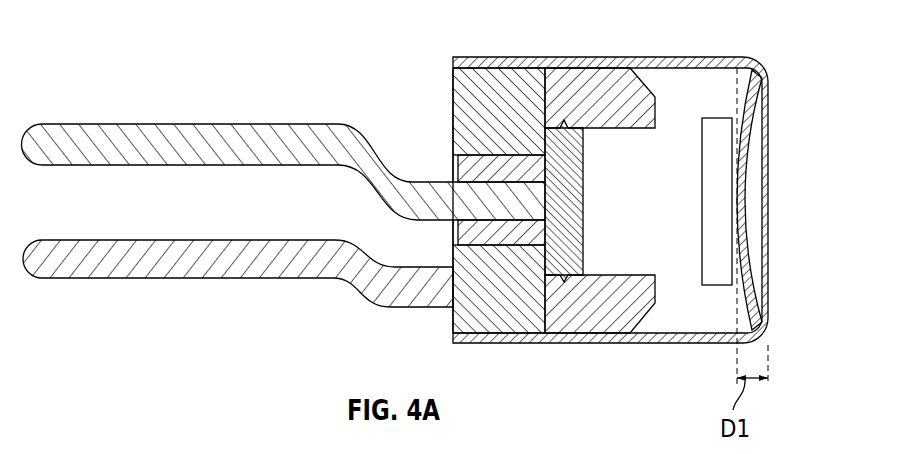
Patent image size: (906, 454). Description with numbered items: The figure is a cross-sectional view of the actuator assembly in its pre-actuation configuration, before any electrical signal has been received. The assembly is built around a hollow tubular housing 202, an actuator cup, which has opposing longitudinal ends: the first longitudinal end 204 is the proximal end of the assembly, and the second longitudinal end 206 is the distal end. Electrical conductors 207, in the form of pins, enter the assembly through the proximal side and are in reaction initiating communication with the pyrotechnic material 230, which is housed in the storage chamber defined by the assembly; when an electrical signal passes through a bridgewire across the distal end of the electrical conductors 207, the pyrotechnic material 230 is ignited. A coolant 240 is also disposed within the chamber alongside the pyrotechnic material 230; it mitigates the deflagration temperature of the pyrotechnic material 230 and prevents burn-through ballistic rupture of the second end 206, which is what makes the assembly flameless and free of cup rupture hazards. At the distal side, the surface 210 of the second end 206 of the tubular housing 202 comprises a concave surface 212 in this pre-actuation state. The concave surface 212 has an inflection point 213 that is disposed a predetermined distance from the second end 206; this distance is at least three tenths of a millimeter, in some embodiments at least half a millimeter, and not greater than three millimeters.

The tubular housing 202 is at (640, 343).
The first longitudinal end 204 is at (448, 52).
The second longitudinal end 206 is at (645, 211).
The electrical conductors 207 is at (120, 128).
The surface 210 is at (654, 211).
The concave surface 212 is at (791, 200).
The inflection point 213 is at (748, 208).
The pyrotechnic material 230 is at (560, 162).
The coolant 240 is at (725, 120).